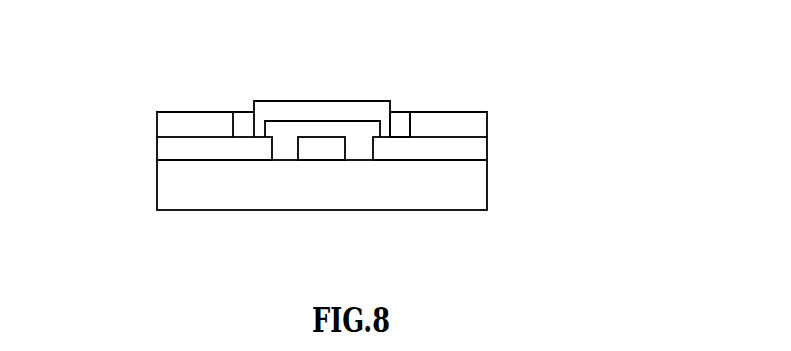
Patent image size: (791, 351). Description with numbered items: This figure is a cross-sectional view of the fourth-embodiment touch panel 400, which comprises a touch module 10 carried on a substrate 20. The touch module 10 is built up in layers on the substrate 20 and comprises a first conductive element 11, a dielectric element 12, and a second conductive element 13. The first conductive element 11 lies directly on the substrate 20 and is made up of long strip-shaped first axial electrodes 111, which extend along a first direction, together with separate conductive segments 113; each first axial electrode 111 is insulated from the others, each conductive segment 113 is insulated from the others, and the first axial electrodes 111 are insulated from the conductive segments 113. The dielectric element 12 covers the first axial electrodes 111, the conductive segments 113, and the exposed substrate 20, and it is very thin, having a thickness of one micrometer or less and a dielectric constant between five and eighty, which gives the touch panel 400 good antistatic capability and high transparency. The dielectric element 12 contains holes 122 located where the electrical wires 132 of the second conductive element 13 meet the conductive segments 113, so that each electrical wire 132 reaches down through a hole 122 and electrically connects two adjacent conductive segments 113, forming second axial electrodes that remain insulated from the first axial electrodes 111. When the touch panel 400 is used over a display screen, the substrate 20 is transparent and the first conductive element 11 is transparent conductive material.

The touch panel 400 is at (59, 31).
The touch module 10 is at (620, 30).
The first conductive element 11 is at (565, 108).
The first axial electrode 111 is at (336, 148).
The conductive segment 113 is at (489, 145).
The dielectric element 12 is at (187, 119).
The hole 122 is at (403, 117).
The second conductive element 13 is at (394, 88).
The electrical wire 132 is at (351, 111).
The substrate 20 is at (487, 192).